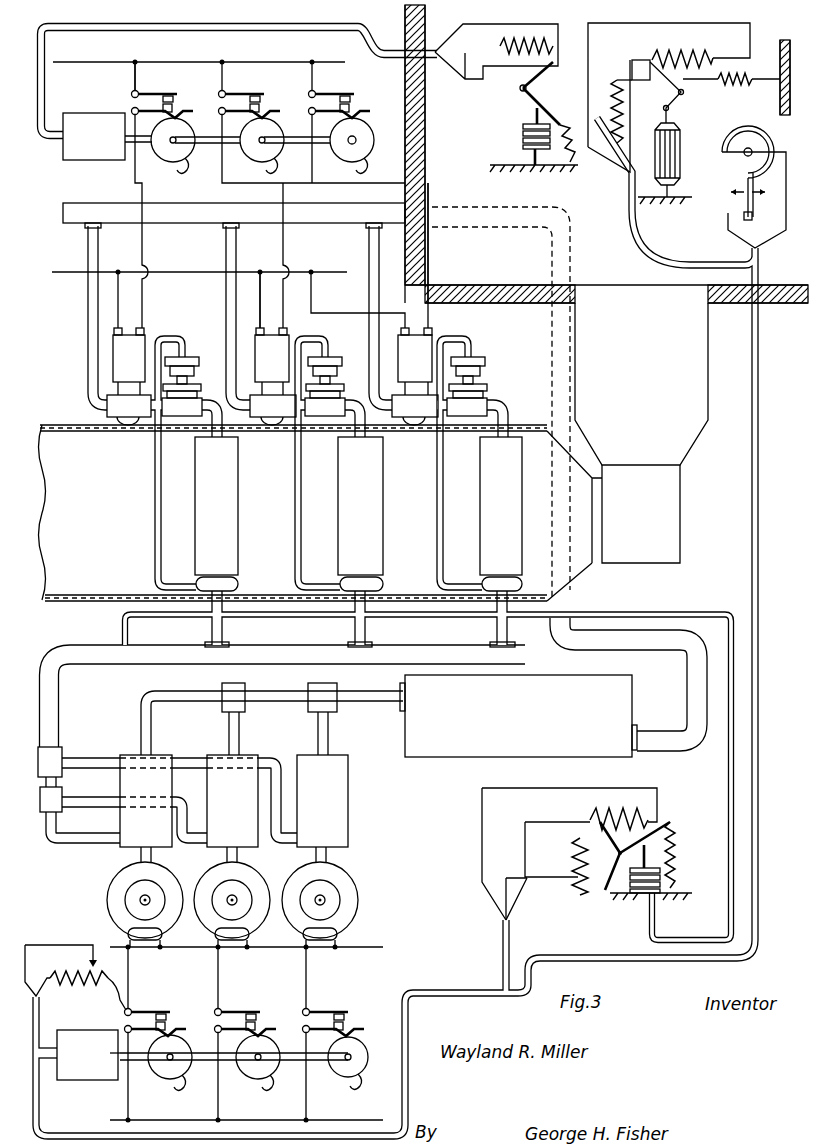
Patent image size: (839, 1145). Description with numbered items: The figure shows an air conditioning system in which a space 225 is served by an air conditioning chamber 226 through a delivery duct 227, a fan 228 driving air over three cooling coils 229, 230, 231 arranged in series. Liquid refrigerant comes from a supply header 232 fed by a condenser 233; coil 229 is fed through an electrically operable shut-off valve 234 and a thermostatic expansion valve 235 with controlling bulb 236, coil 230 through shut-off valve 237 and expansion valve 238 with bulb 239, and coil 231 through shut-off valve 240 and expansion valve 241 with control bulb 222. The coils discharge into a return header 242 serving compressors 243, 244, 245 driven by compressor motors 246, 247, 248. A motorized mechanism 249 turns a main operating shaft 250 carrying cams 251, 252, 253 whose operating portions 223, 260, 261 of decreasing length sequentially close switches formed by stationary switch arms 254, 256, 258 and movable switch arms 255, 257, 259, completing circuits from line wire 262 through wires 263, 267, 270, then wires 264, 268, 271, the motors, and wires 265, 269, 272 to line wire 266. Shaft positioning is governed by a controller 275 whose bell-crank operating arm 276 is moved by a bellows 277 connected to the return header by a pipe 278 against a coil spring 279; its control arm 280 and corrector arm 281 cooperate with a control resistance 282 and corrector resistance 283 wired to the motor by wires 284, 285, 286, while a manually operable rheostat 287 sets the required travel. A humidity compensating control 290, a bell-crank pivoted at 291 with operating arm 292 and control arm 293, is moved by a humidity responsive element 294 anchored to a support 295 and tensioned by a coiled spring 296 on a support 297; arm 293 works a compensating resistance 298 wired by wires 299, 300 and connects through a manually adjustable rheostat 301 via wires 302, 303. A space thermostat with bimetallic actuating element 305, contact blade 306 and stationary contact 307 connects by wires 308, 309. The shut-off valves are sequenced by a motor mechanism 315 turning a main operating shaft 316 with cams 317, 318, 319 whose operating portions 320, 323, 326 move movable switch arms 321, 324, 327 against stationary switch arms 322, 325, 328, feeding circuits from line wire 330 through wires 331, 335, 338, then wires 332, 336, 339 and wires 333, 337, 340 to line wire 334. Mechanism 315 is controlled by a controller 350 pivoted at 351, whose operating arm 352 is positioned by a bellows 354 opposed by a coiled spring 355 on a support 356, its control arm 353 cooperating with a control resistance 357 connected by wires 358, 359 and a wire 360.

The control bulb 222 is at (490, 583).
The operating portion 223 is at (217, 1076).
The space 225 is at (545, 255).
The air conditioning chamber 226 is at (113, 498).
The delivery duct 227 is at (656, 365).
The fan 228 is at (672, 560).
The cooling coil 229 is at (230, 507).
The cooling coil 230 is at (368, 492).
The cooling coil 231 is at (490, 497).
The supply header 232 is at (63, 210).
The condenser 233 is at (534, 753).
The electrically operable shut-off valve 234 is at (140, 345).
The thermostatic expansion valve 235 is at (200, 375).
The controlling bulb 236 is at (225, 585).
The electrically operable shut-off valve 237 is at (288, 345).
The thermostatic expansion valve 238 is at (335, 373).
The controlling bulb 239 is at (378, 586).
The electrically operable shut-off valve 240 is at (425, 350).
The thermostatic expansion valve 241 is at (478, 405).
The return header 242 is at (95, 665).
The compressor 243 is at (164, 831).
The compressor 244 is at (251, 817).
The compressor 245 is at (341, 815).
The compressor motor 246 is at (128, 893).
The compressor motor 247 is at (225, 892).
The compressor motor 248 is at (330, 895).
The motorized mechanism 249 is at (88, 1040).
The main operating shaft 250 is at (352, 1057).
The cam 251 is at (180, 1065).
The cam 252 is at (270, 1068).
The cam 253 is at (358, 1066).
The stationary switch arm 254 is at (160, 1003).
The movable switch arm 255 is at (116, 1005).
The stationary switch arm 256 is at (248, 1003).
The movable switch arm 257 is at (218, 1029).
The stationary switch arm 258 is at (335, 1005).
The movable switch arm 259 is at (306, 1029).
The operating portion 260 is at (218, 1080).
The operating portion 261 is at (340, 1072).
The line wire 262 is at (118, 1121).
The wire 263 is at (127, 1090).
The wire 264 is at (130, 975).
The wire 265 is at (165, 937).
The line wire 266 is at (125, 946).
The wire 267 is at (220, 1114).
The wire 268 is at (222, 990).
The wire 269 is at (250, 937).
The wire 270 is at (310, 1116).
The wire 271 is at (310, 980).
The wire 272 is at (340, 937).
The controller 275 is at (586, 908).
The operating arm 276 is at (672, 824).
The bellows 277 is at (635, 897).
The pipe 278 is at (728, 767).
The coil spring 279 is at (676, 860).
The control arm 280 is at (612, 848).
The corrector arm 281 is at (612, 878).
The control resistance 282 is at (600, 814).
The corrector resistance 283 is at (603, 890).
The wire 284 is at (542, 788).
The wire 285 is at (527, 822).
The wire 286 is at (510, 878).
The manually operable rheostat 287 is at (53, 940).
The compensating control 290 is at (705, 118).
The pivot 291 is at (685, 92).
The operating arm 292 is at (676, 102).
The control arm 293 is at (665, 60).
The humidity responsive element 294 is at (682, 162).
The support 295 is at (680, 197).
The coiled spring 296 is at (740, 84).
The support 297 is at (780, 100).
The compensating resistance 298 is at (680, 46).
The wire 299 is at (750, 36).
The wire 300 is at (634, 62).
The manually adjustable rheostat 301 is at (604, 100).
The wire 302 is at (665, 84).
The wire 303 is at (612, 150).
The bimetallic actuating element 305 is at (772, 130).
The contact blade 306 is at (776, 234).
The stationary contact 307 is at (738, 218).
The wire 308 is at (766, 242).
The wire 309 is at (748, 248).
The motor mechanism 315 is at (88, 120).
The main operating shaft 316 is at (378, 155).
The cam 317 is at (188, 162).
The cam 318 is at (272, 150).
The cam 319 is at (362, 141).
The operating portion 320 is at (162, 160).
The movable switch arm 321 is at (182, 116).
The stationary switch arm 322 is at (158, 93).
The operating portion 323 is at (270, 162).
The movable switch arm 324 is at (260, 110).
The stationary switch arm 325 is at (238, 93).
The operating portion 326 is at (350, 175).
The movable switch arm 327 is at (355, 116).
The switch arm 328 is at (347, 100).
The line wire 330 is at (97, 62).
The wire 331 is at (132, 74).
The wire 332 is at (135, 185).
The wire 333 is at (112, 302).
The line wire 334 is at (66, 270).
The wire 335 is at (174, 105).
The wire 336 is at (284, 236).
The wire 337 is at (258, 296).
The wire 338 is at (310, 80).
The wire 339 is at (430, 205).
The wire 340 is at (345, 313).
The controller 350 is at (492, 106).
The pivot 351 is at (521, 95).
The operating arm 352 is at (568, 125).
The control arm 353 is at (545, 108).
The bellows 354 is at (523, 134).
The coiled spring 355 is at (570, 162).
The support 356 is at (515, 164).
The control resistance 357 is at (510, 44).
The wire 358 is at (467, 40).
The wire 359 is at (465, 80).
The wire 360 is at (520, 86).